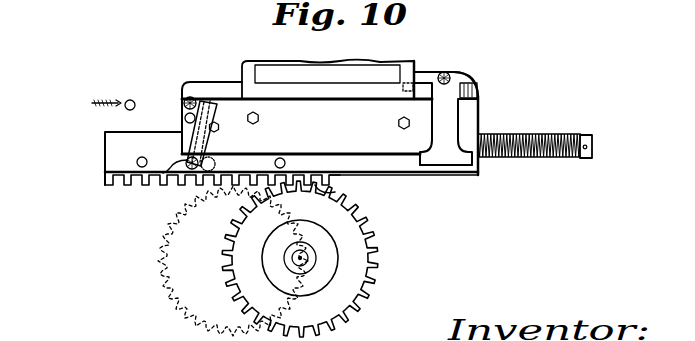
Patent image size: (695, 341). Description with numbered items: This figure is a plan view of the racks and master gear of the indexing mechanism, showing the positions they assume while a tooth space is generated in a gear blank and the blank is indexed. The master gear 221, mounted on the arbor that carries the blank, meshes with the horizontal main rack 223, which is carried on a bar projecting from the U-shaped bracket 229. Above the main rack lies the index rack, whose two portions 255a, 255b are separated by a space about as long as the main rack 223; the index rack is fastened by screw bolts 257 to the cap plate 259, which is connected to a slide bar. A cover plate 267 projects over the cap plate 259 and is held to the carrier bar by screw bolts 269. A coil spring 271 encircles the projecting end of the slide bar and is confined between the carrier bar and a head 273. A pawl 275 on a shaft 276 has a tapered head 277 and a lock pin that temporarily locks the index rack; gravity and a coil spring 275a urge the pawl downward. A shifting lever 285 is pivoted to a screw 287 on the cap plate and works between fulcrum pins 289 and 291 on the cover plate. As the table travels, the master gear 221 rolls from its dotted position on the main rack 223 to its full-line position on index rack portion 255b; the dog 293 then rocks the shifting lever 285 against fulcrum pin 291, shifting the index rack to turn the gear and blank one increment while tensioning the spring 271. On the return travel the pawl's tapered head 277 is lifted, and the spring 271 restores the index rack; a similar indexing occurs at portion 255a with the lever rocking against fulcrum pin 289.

The master gear 221 is at (357, 245).
The main rack 223 is at (242, 190).
The U-shaped bracket 229 is at (414, 62).
The index rack portion 255a is at (123, 183).
The index rack portion 255b is at (330, 187).
The screw bolts 257 is at (137, 162).
The cap plate 259 is at (108, 141).
The cover plate 267 is at (353, 116).
The screw bolts 269 is at (259, 118).
The coil spring 271 is at (532, 135).
The head 273 is at (592, 142).
The pawl 275 is at (446, 71).
The coil spring 275a is at (480, 69).
The shaft 276 is at (480, 96).
The tapered head 277 is at (447, 166).
The shifting lever 285 is at (208, 99).
The screw 287 is at (163, 177).
The fulcrum pin 289 is at (185, 118).
The fulcrum pin 291 is at (219, 129).
The dog 293 is at (135, 102).